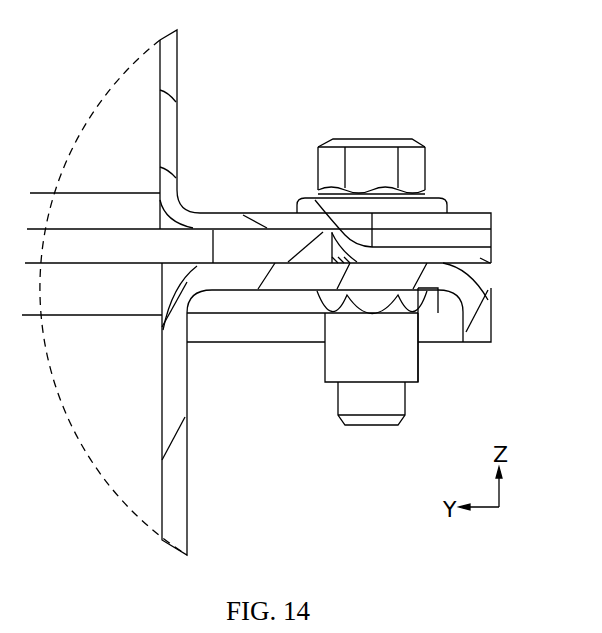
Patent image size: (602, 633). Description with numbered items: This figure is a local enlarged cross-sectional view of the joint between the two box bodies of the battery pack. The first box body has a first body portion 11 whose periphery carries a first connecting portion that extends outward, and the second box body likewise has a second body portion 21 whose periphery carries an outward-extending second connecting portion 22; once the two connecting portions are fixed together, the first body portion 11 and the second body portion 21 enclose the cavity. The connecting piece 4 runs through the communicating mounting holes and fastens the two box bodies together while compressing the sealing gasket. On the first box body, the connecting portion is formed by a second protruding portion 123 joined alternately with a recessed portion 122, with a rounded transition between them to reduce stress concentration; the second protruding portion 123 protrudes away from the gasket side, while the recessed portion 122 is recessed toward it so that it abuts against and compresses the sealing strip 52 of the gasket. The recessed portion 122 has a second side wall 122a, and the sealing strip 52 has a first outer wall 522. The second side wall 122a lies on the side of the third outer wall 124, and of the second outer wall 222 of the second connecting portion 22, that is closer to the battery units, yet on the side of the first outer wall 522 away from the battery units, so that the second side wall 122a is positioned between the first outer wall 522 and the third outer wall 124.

The connecting piece 4 is at (387, 148).
The first body portion 11 is at (177, 82).
The second body portion 21 is at (177, 455).
The second connecting portion 22 is at (240, 277).
The sealing strip 52 is at (222, 238).
The first outer wall 522 is at (328, 214).
The recessed portion 122 is at (430, 247).
The second side wall 122a is at (350, 228).
The second protruding portion 123 is at (478, 218).
The third outer wall 124 is at (492, 222).
The second outer wall 222 is at (492, 333).